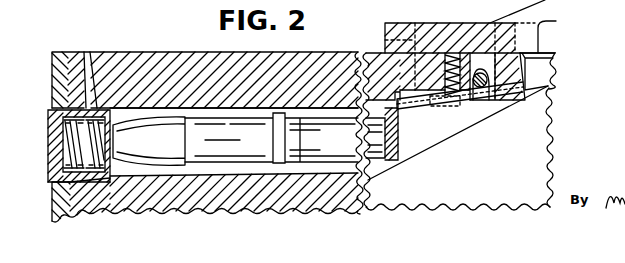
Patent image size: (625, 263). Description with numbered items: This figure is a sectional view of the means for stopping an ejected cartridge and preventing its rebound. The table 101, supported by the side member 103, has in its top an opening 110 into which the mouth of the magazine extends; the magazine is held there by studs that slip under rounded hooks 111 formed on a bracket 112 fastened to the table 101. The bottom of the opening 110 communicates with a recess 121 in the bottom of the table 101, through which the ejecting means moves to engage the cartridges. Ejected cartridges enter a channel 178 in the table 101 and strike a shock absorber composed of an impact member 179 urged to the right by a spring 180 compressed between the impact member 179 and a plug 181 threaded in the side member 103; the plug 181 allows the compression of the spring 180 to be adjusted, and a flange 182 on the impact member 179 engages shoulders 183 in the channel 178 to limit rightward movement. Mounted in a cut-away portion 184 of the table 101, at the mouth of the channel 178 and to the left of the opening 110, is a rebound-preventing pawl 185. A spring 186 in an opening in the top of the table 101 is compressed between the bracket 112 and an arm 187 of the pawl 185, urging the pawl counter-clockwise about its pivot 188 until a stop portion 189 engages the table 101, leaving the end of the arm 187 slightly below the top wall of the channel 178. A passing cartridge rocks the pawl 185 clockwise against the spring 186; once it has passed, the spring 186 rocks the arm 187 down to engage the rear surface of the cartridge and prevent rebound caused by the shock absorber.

The table 101 is at (195, 66).
The side member 103 is at (66, 66).
The opening 110 is at (549, 55).
The rounded hooks 111 is at (556, 12).
The bracket 112 is at (472, 30).
The recess 121 is at (412, 157).
The channel 178 is at (215, 175).
The impact member 179 is at (111, 127).
The spring 180 is at (66, 141).
The plug 181 is at (50, 126).
The flange 182 is at (96, 56).
The shoulders 183 is at (130, 100).
The cut-away portion 184 is at (395, 98).
The rebound-preventing pawl 185 is at (470, 90).
The spring 186 is at (449, 100).
The arm 187 is at (401, 105).
The pivot 188 is at (489, 94).
The stop portion 189 is at (548, 83).